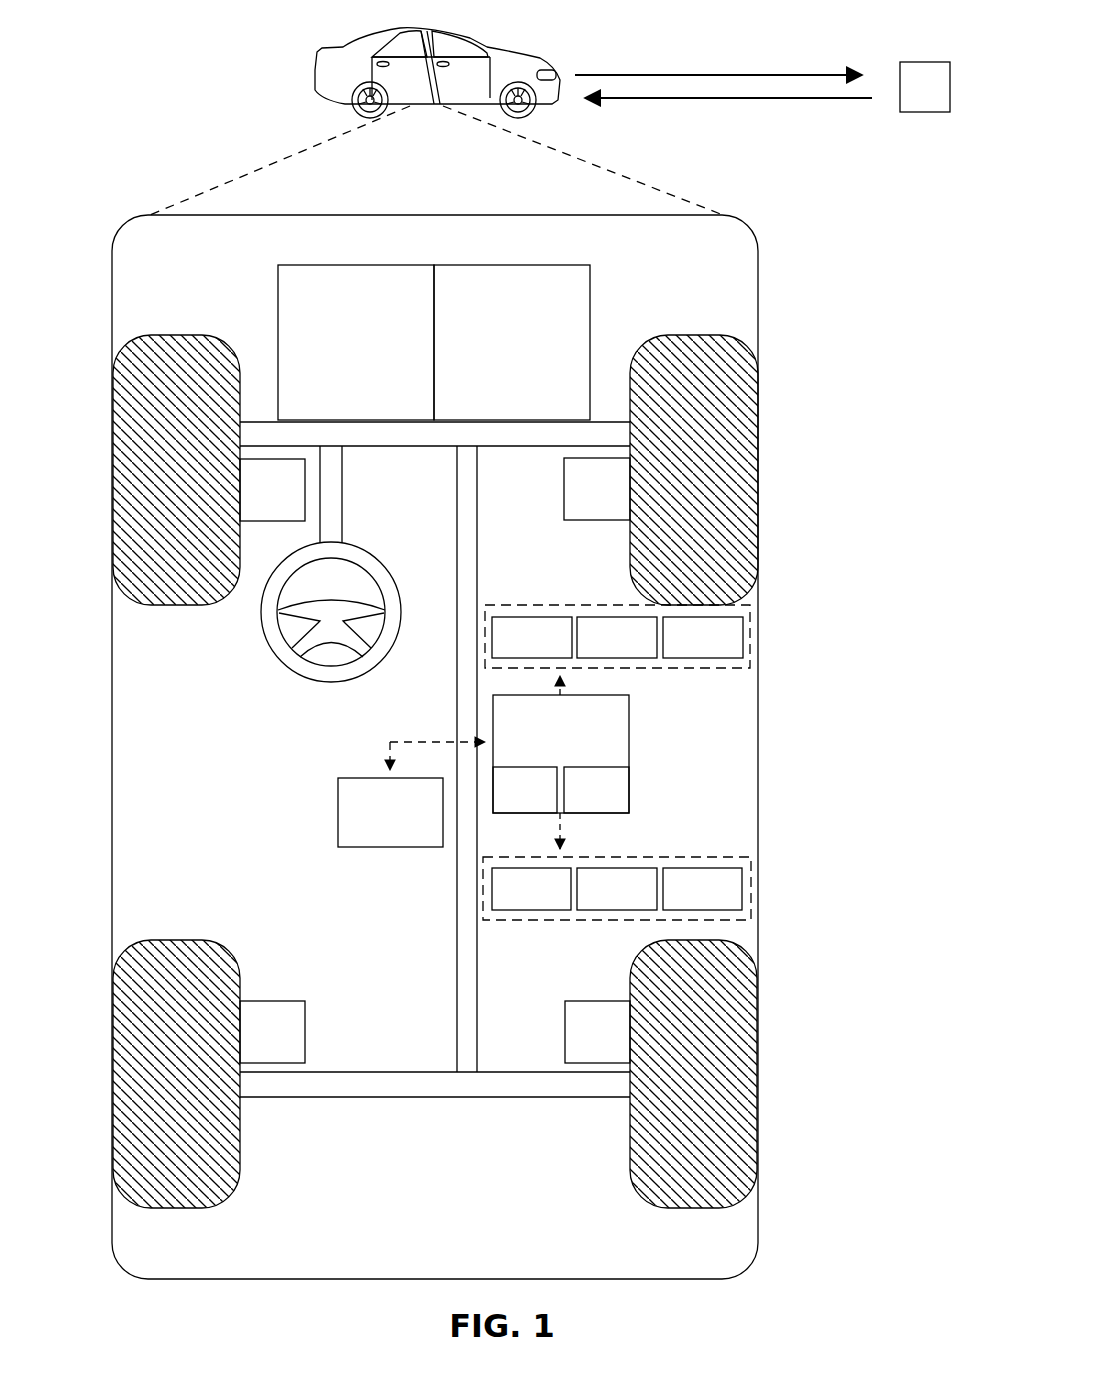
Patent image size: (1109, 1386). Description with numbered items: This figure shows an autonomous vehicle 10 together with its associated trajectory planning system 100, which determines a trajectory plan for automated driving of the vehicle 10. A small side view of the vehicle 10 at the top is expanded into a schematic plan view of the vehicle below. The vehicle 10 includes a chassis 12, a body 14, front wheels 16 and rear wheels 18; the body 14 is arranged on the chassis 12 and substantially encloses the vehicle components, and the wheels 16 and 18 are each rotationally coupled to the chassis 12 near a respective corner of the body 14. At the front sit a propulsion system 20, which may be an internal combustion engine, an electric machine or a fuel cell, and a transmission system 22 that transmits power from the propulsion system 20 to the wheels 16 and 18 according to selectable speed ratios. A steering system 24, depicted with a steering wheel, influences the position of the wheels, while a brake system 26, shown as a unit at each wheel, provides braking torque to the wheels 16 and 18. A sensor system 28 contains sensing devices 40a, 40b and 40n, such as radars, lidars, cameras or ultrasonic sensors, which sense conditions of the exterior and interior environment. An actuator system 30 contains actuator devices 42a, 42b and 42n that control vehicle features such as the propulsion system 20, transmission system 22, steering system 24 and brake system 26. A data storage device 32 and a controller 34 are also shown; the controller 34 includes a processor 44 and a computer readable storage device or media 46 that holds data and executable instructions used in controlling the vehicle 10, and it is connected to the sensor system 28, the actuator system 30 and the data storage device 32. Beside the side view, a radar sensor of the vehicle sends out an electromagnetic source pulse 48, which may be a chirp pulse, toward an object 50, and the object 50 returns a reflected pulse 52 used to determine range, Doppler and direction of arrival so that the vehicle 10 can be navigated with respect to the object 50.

The vehicle 10 is at (317, 56).
The chassis 12 is at (457, 930).
The body 14 is at (112, 708).
The front wheels 16 is at (175, 335).
The rear wheels 18 is at (175, 1208).
The propulsion system 20 is at (338, 354).
The transmission system 22 is at (494, 354).
The steering system 24 is at (356, 520).
The brake system 26 is at (290, 506).
The sensor system 28 is at (576, 605).
The actuator system 30 is at (580, 920).
The data storage device 32 is at (372, 827).
The controller 34 is at (543, 748).
The sensing device 40a is at (510, 652).
The sensing device 40b is at (595, 652).
The sensing device 40n is at (681, 652).
The actuator device 42a is at (509, 904).
The actuator device 42b is at (595, 904).
The actuator device 42n is at (680, 904).
The processor 44 is at (509, 805).
The computer readable storage device or media 46 is at (581, 805).
The electromagnetic source pulse 48 is at (725, 75).
The object 50 is at (928, 62).
The reflected pulse 52 is at (725, 98).
The trajectory planning system 100 is at (797, 203).